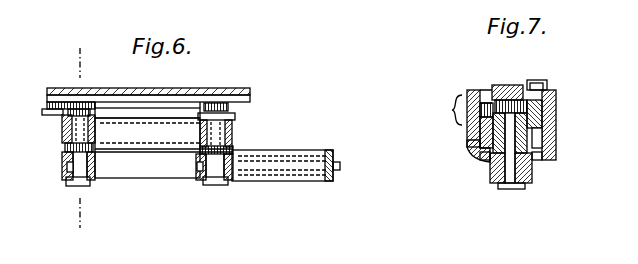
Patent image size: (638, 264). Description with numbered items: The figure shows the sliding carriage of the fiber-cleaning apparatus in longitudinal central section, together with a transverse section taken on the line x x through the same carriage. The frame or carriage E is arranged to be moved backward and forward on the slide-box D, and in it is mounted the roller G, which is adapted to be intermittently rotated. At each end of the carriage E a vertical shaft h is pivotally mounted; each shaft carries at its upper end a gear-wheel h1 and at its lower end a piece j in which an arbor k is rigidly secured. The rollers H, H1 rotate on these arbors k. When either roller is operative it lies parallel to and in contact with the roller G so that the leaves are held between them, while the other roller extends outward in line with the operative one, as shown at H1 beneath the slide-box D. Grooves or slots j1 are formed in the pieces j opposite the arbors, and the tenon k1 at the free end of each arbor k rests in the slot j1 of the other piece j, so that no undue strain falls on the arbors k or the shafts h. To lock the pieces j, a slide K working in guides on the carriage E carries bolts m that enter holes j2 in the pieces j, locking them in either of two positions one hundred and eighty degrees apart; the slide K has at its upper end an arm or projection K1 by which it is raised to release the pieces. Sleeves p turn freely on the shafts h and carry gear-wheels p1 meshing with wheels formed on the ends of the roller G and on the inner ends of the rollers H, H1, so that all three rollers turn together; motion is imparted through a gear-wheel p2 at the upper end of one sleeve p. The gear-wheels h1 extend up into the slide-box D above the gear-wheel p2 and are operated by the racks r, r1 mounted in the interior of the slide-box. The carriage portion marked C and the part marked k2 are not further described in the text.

In FIG. 6, the section line x is at (78, 138).
In FIG. 6, the frame or carriage E is at (168, 88).
In FIG. 7, the frame or carriage E is at (476, 144).
In FIG. 6, the slide-box D is at (250, 98).
In FIG. 7, the slide-box D is at (500, 86).
In FIG. 6, the rack r1 is at (62, 97).
In FIG. 7, the rack r1 is at (480, 95).
In FIG. 6, the gear-wheel h1 is at (86, 104).
In FIG. 7, the gear-wheel h1 is at (512, 100).
In FIG. 6, the roller G is at (163, 143).
In FIG. 6, the roller H is at (141, 165).
In FIG. 6, the roller H1 is at (281, 182).
In FIG. 6, the pin k2 is at (48, 113).
In FIG. 6, the tenon k1 is at (199, 166).
In FIG. 6, the arbor k is at (305, 166).
In FIG. 6, the vertical shaft h is at (78, 182).
In FIG. 7, the vertical shaft h is at (510, 190).
In FIG. 6, the sleeve p is at (233, 130).
In FIG. 7, the sleeve p is at (468, 132).
In FIG. 6, the gear-wheel p1 is at (65, 147).
In FIG. 7, the gear-wheel p1 is at (494, 168).
In FIG. 7, the gear-wheel p2 is at (548, 124).
In FIG. 6, the piece j is at (66, 176).
In FIG. 7, the piece j is at (532, 172).
In FIG. 6, the groove or slot j1 is at (66, 162).
In FIG. 7, the hole j2 is at (481, 158).
In FIG. 7, the carriage C is at (452, 111).
In FIG. 7, the rack r is at (534, 83).
In FIG. 7, the slide K is at (552, 86).
In FIG. 7, the arm or projection K1 is at (546, 81).
In FIG. 7, the bolt m is at (545, 138).